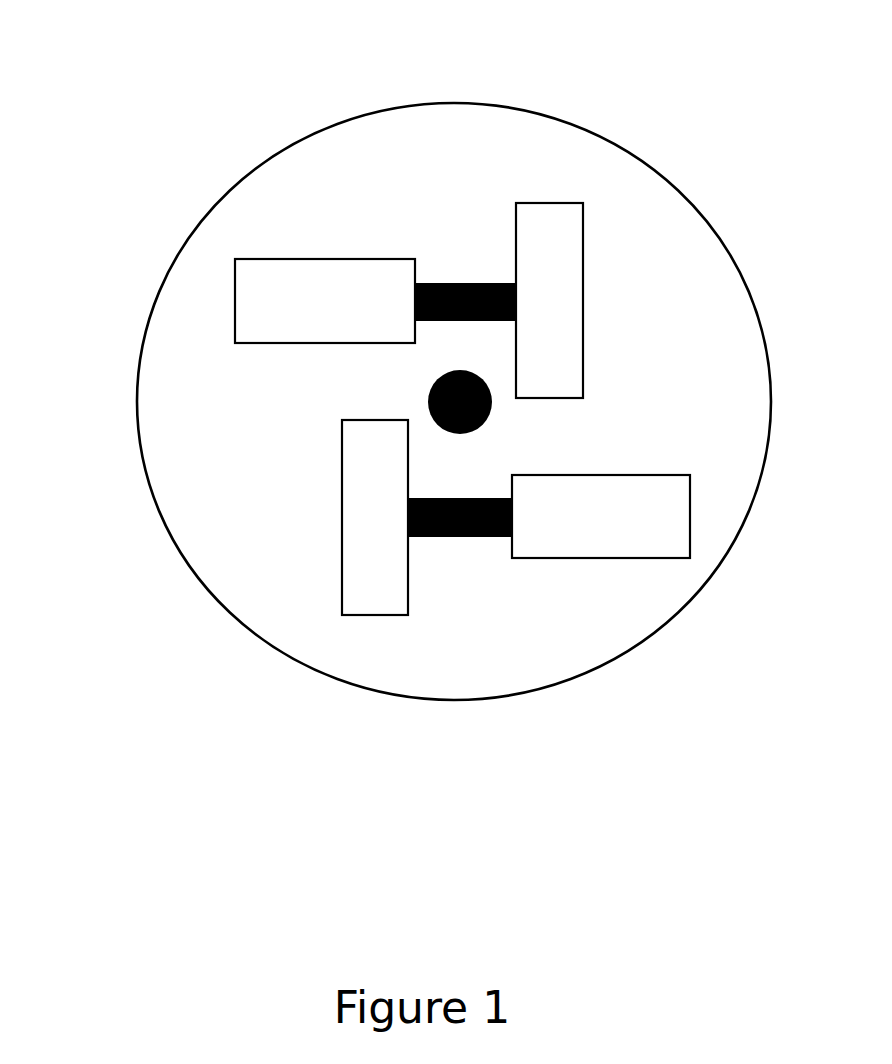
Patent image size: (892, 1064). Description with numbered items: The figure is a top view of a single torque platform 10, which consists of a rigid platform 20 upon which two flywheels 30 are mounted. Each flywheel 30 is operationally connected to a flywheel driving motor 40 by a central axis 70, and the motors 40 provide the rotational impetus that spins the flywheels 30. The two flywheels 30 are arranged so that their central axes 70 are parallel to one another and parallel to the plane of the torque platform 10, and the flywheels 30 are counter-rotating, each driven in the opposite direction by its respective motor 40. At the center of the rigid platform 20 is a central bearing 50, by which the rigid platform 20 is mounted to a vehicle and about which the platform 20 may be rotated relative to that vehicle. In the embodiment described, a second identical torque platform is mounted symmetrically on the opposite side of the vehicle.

The torque platform 10 is at (778, 32).
The rigid platform 20 is at (142, 428).
The flywheel 30 is at (462, 409).
The flywheel driving motor 40 is at (462, 408).
The central bearing 50 is at (428, 398).
The central axis 70 is at (462, 280).